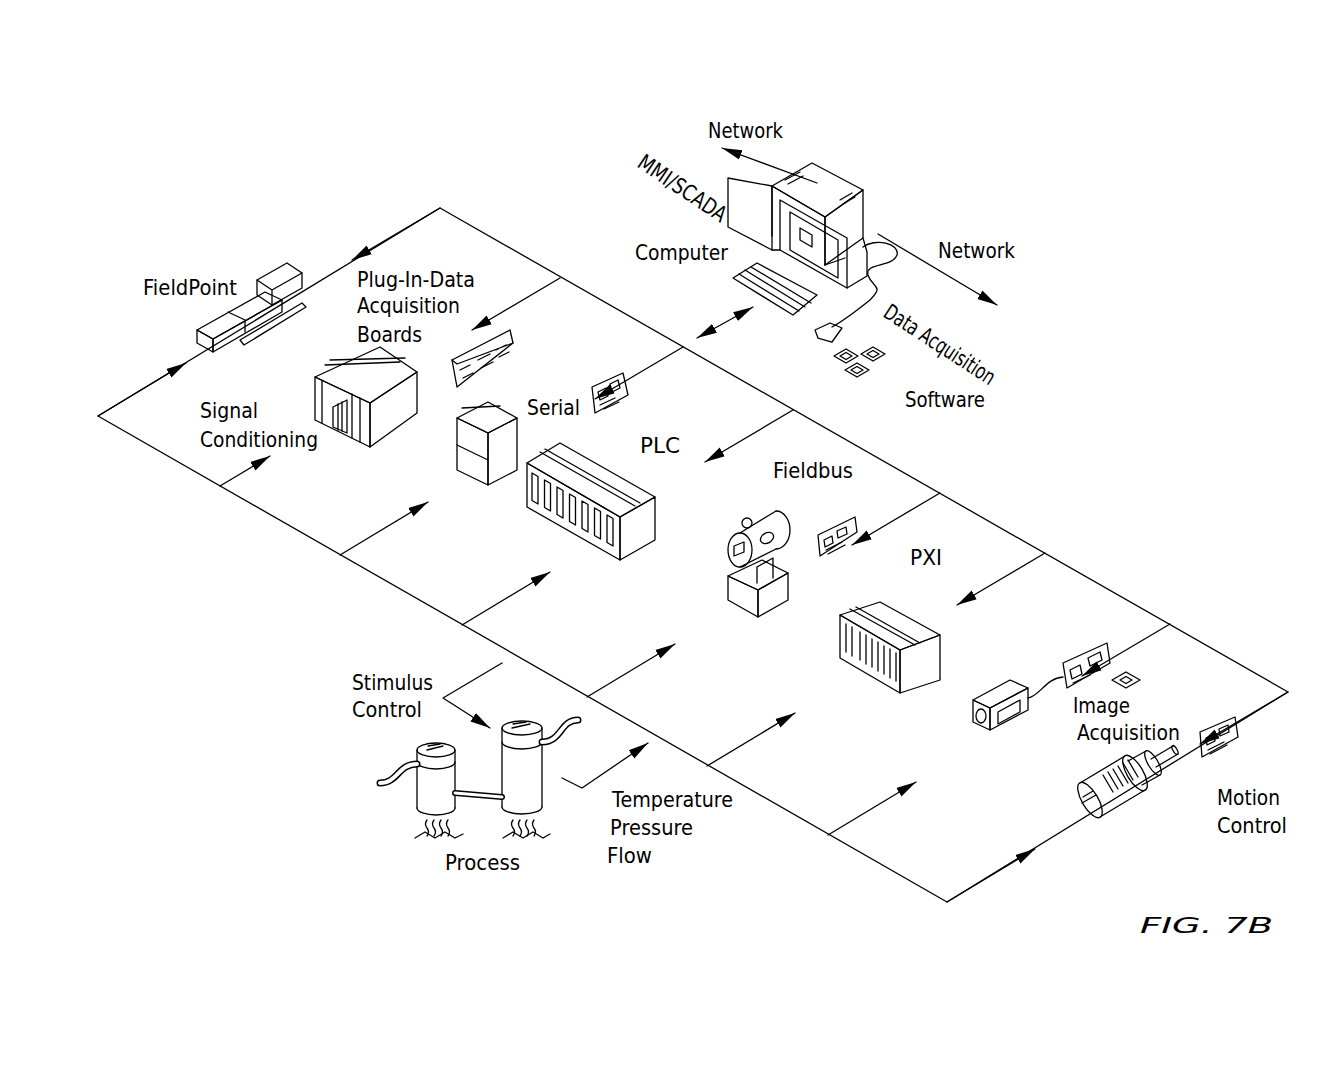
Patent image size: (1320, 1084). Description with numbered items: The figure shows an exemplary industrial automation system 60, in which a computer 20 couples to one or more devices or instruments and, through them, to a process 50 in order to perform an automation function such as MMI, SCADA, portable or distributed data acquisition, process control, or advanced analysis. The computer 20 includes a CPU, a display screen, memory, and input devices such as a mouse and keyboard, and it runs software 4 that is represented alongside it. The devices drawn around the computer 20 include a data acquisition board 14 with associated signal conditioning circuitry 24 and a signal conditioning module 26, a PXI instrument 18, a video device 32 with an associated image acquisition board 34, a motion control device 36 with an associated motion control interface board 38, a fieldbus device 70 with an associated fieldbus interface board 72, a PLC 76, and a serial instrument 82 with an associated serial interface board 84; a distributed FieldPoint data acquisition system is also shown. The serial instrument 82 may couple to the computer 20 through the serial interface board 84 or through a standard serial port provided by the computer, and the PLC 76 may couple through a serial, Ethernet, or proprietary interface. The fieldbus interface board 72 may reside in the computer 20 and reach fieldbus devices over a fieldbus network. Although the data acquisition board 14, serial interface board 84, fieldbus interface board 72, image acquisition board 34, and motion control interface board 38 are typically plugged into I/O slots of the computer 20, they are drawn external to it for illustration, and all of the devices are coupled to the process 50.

The industrial automation system 60 is at (1160, 245).
The computer 20 is at (830, 180).
The software 4 is at (863, 377).
The data acquisition board 14 is at (500, 333).
The signal conditioning circuitry 24 is at (345, 373).
The signal conditioning module 26 is at (340, 430).
The serial instrument 82 is at (465, 462).
The serial interface board 84 is at (607, 378).
The PLC 76 is at (600, 483).
The fieldbus device 70 is at (770, 607).
The fieldbus interface board 72 is at (845, 520).
The PXI instrument 18 is at (883, 612).
The video device 32 is at (1012, 682).
The image acquisition board 34 is at (1082, 653).
The motion control device 36 is at (1112, 808).
The motion control interface board 38 is at (1215, 747).
The process 50 is at (385, 774).